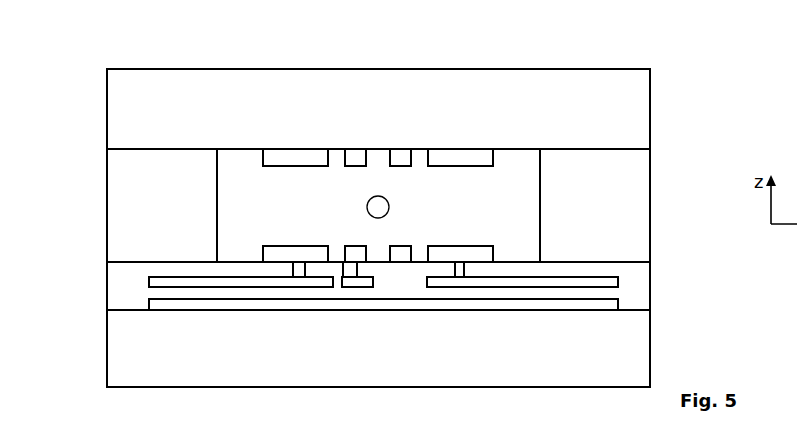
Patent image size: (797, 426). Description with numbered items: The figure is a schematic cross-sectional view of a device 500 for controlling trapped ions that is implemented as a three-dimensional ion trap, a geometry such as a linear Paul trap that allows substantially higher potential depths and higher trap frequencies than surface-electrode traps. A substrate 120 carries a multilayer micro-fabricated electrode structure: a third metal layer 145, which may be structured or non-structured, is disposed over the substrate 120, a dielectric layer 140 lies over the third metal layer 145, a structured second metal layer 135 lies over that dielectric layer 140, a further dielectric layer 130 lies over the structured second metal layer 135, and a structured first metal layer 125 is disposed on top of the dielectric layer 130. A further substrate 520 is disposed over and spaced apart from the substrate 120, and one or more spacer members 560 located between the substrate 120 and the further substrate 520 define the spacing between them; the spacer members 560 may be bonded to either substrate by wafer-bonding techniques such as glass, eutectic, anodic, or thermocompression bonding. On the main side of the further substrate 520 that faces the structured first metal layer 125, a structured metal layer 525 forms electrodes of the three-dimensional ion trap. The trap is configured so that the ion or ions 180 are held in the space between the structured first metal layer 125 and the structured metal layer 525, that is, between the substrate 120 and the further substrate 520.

The device for controlling trapped ions 500 is at (614, 45).
The further substrate 520 is at (117, 89).
The spacer members 560 is at (117, 184).
The substrate 120 is at (118, 328).
The dielectric layer 130 is at (247, 270).
The structured second metal layer 135 is at (198, 283).
The dielectric layer 140 is at (210, 293).
The third metal layer 145 is at (257, 307).
The structured first metal layer 125 is at (442, 255).
The structured metal layer 525 is at (441, 154).
The ion 180 is at (367, 205).